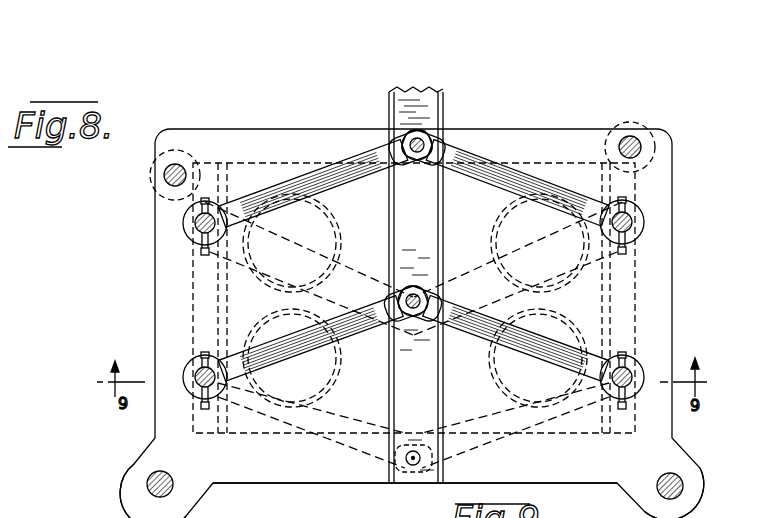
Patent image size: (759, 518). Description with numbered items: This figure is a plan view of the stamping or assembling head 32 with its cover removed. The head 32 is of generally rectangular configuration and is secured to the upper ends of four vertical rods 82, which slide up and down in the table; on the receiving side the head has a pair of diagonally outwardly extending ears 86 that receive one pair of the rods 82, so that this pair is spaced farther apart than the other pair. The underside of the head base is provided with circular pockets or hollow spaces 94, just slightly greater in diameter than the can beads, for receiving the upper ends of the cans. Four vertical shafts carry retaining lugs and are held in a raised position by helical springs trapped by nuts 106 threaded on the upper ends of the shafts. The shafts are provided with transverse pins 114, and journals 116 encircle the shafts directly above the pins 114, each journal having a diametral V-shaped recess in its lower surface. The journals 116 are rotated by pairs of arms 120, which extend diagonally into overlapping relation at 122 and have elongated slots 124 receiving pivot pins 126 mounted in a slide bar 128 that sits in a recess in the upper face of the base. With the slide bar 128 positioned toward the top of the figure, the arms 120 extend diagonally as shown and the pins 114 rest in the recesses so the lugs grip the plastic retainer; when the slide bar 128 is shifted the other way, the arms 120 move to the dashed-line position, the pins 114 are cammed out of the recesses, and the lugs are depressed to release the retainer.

The head 32 is at (145, 290).
The vertical rods 82 is at (177, 167).
The ears 86 is at (133, 465).
The pockets or hollow spaces 94 is at (340, 222).
The nuts 106 is at (292, 517).
The transverse pins 114 is at (203, 250).
The journals 116 is at (183, 217).
The arms 120 is at (333, 170).
The overlapping relation 122 is at (440, 138).
The elongated slots 124 is at (432, 165).
The pivot pins 126 is at (412, 134).
The slide bar 128 is at (400, 87).